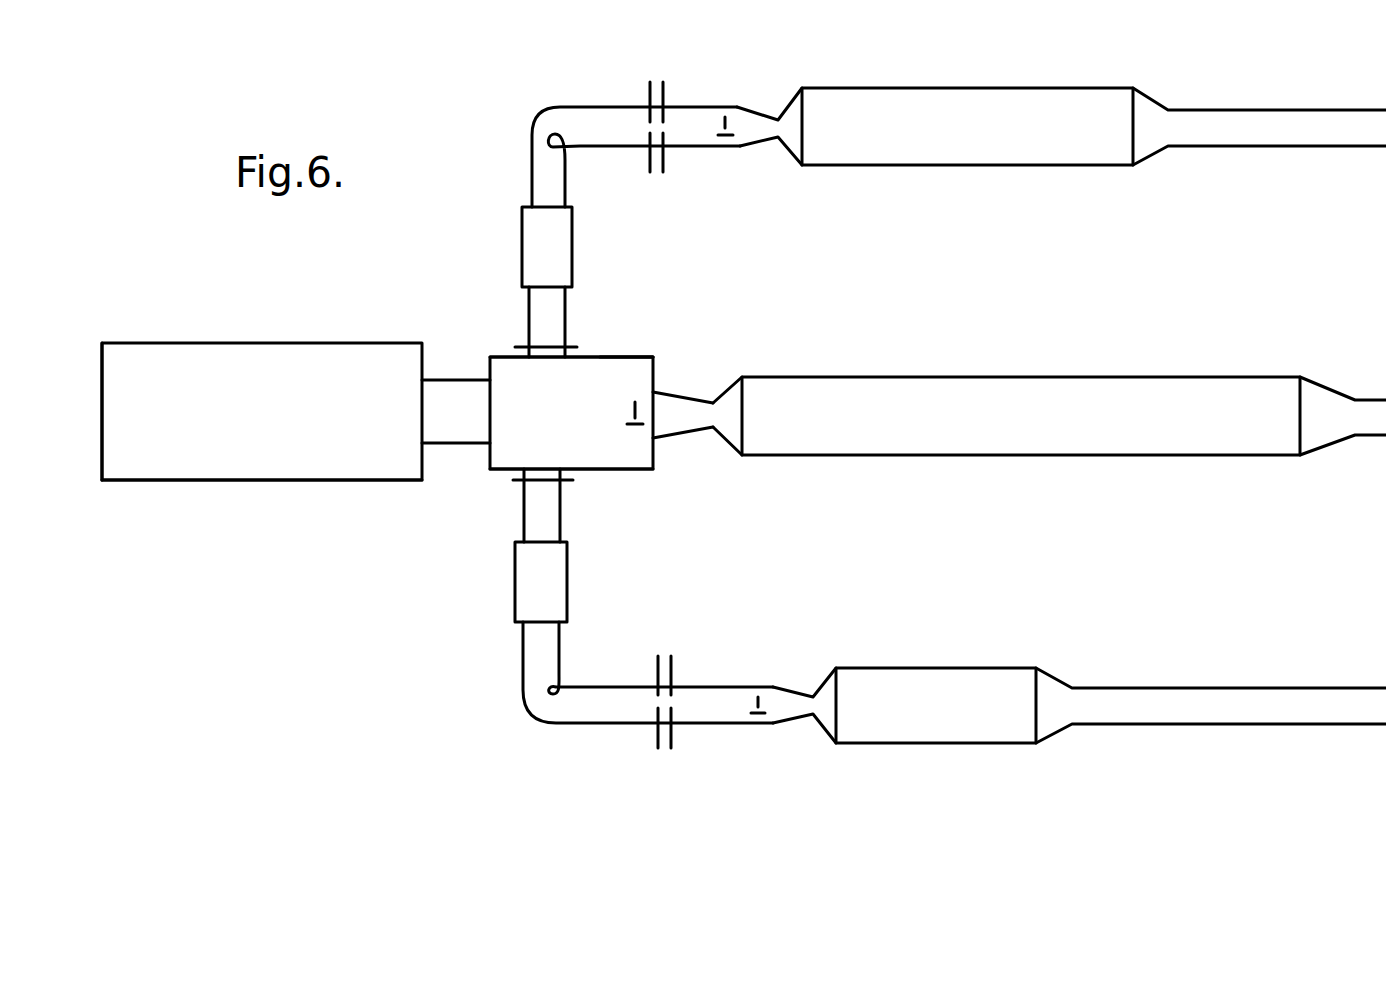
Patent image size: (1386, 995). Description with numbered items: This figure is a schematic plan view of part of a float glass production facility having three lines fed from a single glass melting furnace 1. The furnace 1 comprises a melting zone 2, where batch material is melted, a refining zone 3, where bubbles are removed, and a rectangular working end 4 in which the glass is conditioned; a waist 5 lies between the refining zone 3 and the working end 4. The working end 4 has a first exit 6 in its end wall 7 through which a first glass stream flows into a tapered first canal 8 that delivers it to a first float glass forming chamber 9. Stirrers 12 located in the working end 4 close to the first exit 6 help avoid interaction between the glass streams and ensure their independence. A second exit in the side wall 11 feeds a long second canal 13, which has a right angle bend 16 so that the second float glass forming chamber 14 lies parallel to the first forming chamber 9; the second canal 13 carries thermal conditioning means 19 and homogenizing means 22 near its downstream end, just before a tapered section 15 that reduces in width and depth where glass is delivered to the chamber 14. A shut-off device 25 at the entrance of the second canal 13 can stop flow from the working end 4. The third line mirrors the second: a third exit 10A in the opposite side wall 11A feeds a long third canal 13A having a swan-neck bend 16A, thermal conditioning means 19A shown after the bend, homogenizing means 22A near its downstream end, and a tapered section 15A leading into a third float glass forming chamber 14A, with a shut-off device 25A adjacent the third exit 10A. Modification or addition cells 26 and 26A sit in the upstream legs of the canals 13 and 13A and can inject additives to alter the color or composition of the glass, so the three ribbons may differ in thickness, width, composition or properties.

The glass melting furnace 1 is at (366, 330).
The melting zone 2 is at (166, 458).
The refining zone 3 is at (317, 458).
The working end 4 is at (486, 472).
The waist 5 is at (460, 380).
The first exit 6 is at (654, 415).
The end wall 7 is at (655, 375).
The first canal 8 is at (706, 430).
The first float glass forming chamber 9 is at (988, 375).
The third exit 10A is at (545, 358).
The side wall 11 is at (637, 472).
The side wall 11A is at (640, 353).
The stirrers 12 is at (626, 413).
The second canal 13 is at (590, 727).
The third canal 13A is at (568, 312).
The second float glass forming chamber 14 is at (943, 667).
The third float glass forming chamber 14A is at (1047, 88).
The tapered section 15 is at (785, 687).
The tapered section 15A is at (755, 145).
The right angle bend 16 is at (530, 707).
The swan-neck bend 16A is at (540, 122).
The thermal conditioning means 19 is at (665, 750).
The thermal conditioning means 19A is at (656, 80).
The homogenizing means 22 is at (756, 732).
The homogenizing means 22A is at (723, 108).
The shut-off device 25 is at (512, 481).
The shut-off device 25A is at (580, 345).
The modification or addition cell 26 is at (513, 578).
The modification or addition cell 26A is at (573, 255).